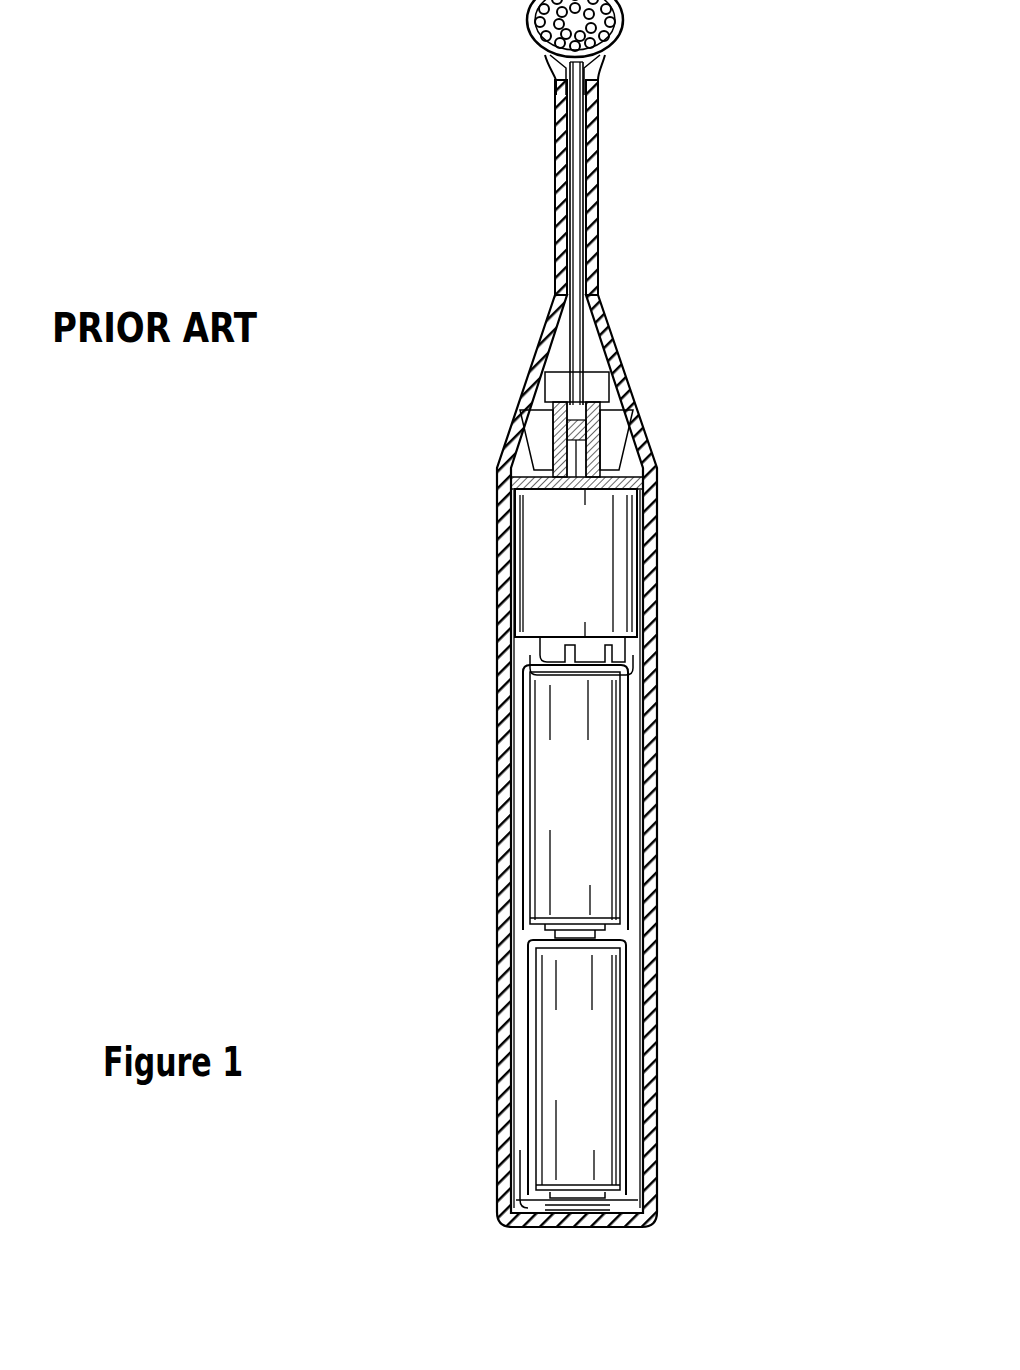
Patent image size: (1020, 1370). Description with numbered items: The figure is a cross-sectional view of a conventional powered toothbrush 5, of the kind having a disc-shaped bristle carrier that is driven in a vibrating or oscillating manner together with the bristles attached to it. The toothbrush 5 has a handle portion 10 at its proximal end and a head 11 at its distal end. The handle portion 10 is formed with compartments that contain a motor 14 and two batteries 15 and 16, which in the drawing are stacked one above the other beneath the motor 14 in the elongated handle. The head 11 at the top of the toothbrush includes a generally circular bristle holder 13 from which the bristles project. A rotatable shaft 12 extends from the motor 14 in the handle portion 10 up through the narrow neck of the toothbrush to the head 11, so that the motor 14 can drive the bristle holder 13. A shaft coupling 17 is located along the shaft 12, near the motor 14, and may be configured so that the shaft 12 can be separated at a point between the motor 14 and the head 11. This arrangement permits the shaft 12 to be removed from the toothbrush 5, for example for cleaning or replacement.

The toothbrush 5 is at (420, 392).
The handle portion 10 is at (497, 538).
The head 11 is at (528, 30).
The rotatable shaft 12 is at (576, 272).
The bristle holder 13 is at (618, 16).
The motor 14 is at (593, 575).
The battery 15 is at (587, 777).
The battery 16 is at (583, 1062).
The shaft coupling 17 is at (600, 438).